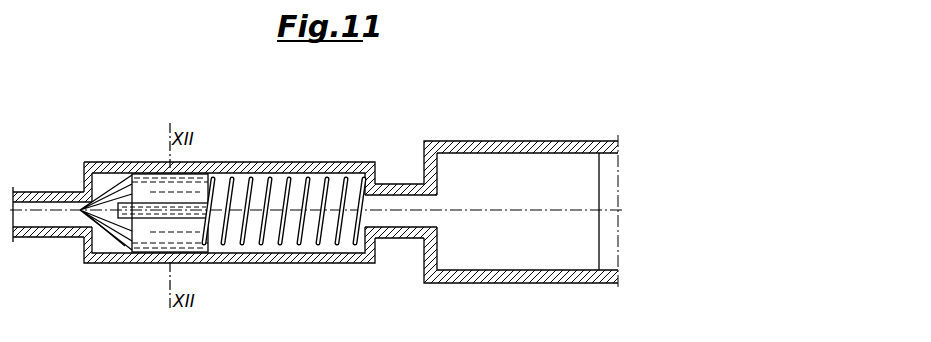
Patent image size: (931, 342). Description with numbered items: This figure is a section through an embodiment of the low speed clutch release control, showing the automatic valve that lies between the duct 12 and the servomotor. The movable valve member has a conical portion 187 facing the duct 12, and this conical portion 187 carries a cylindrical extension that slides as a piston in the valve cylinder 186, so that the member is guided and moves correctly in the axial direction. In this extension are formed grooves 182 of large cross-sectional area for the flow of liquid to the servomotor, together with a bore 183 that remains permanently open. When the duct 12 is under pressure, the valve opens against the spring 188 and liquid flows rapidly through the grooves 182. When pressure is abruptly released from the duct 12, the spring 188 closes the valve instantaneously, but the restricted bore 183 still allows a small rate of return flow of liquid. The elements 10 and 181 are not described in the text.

The cylinder body 10 is at (515, 283).
The duct 12 is at (53, 237).
The piston 181 is at (148, 195).
The grooves 182 is at (193, 178).
The bore 183 is at (104, 208).
The valve cylinder 186 is at (315, 168).
The conical portion 187 is at (110, 240).
The spring 188 is at (323, 237).